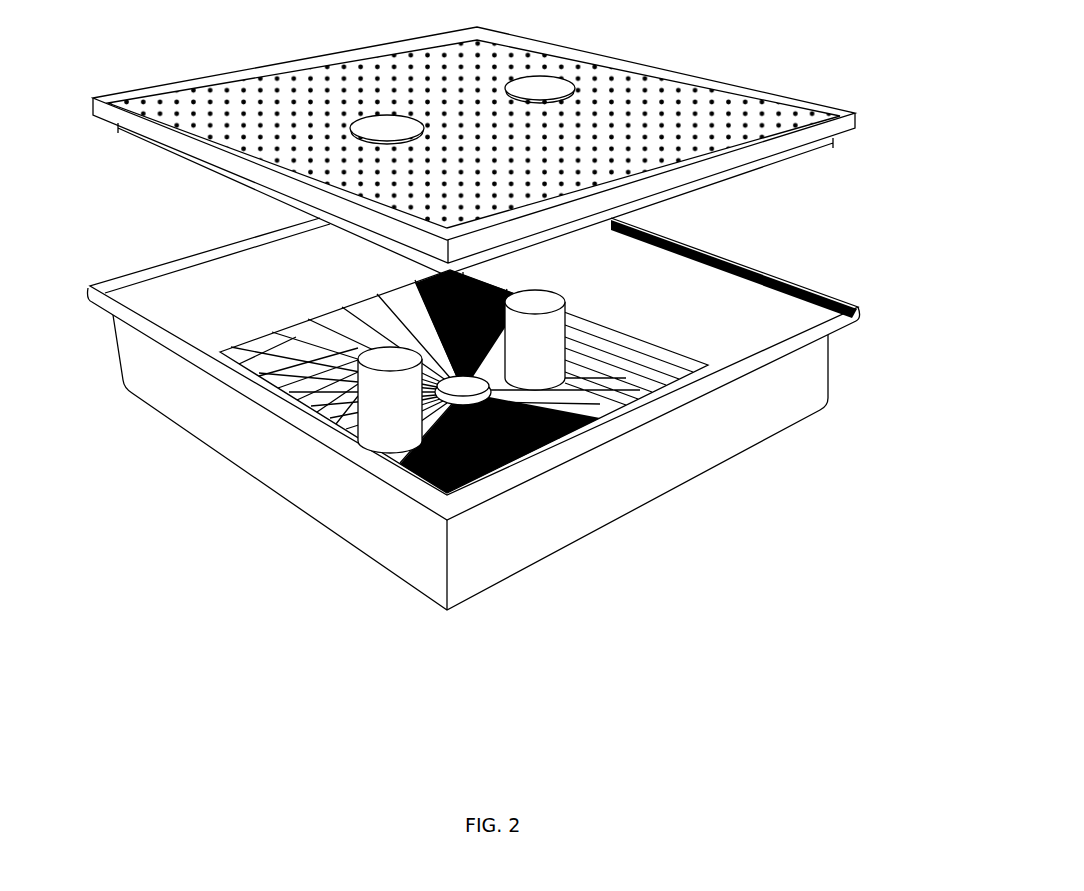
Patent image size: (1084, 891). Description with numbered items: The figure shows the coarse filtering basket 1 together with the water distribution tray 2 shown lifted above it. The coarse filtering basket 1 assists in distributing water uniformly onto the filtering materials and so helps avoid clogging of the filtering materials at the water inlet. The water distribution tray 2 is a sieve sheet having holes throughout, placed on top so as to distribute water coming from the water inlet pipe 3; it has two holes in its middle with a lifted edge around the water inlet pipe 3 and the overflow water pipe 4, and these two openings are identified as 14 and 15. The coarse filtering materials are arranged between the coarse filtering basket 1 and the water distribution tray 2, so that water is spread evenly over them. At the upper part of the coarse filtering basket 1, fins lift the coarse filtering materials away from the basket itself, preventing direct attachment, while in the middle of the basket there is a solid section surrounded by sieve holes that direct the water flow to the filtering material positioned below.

The coarse filtering basket 1 is at (553, 525).
The water distribution tray 2 is at (632, 170).
The water inlet pipe 3 is at (383, 415).
The overflow water pipe 4 is at (543, 338).
The opening in cover plate 14 is at (368, 143).
The opening in cover plate 15 is at (568, 103).